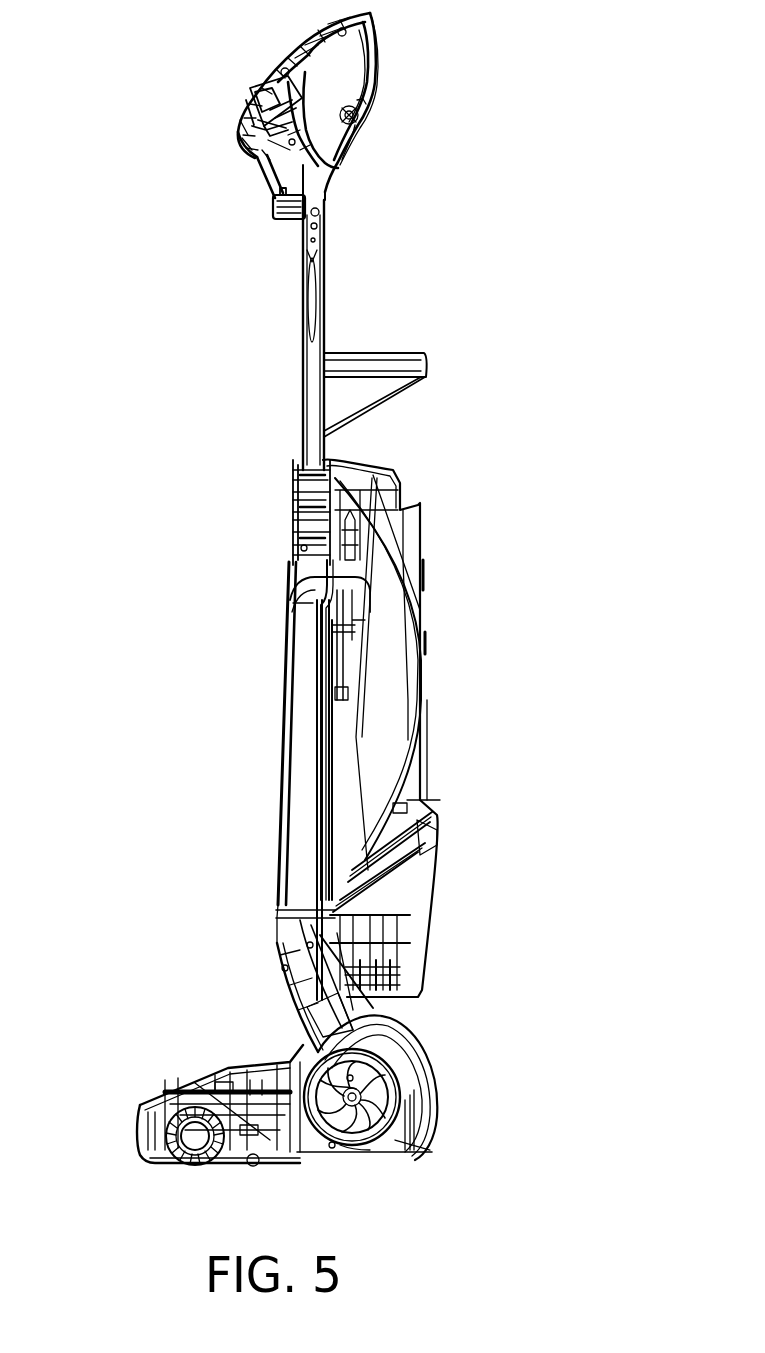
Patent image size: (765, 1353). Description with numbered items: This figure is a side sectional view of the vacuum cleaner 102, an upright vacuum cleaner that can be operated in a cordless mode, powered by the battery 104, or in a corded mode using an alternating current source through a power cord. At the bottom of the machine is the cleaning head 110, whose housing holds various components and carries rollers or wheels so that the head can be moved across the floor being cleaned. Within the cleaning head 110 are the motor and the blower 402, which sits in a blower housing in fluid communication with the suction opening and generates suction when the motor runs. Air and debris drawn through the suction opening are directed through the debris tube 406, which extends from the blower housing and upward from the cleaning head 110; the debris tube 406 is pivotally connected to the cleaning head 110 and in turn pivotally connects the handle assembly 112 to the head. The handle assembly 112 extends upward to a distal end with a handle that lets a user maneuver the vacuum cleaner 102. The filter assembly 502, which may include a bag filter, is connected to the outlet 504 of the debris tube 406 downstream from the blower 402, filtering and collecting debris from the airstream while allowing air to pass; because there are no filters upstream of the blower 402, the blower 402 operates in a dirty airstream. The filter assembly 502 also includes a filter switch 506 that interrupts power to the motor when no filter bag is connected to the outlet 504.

The vacuum cleaner 102 is at (155, 172).
The handle assembly 112 is at (237, 448).
The battery 104 is at (453, 913).
The debris tube 406 is at (297, 874).
The filter assembly 502 is at (440, 664).
The outlet 504 is at (345, 606).
The filter switch 506 is at (350, 523).
The cleaning head 110 is at (162, 1087).
The blower 402 is at (432, 1068).